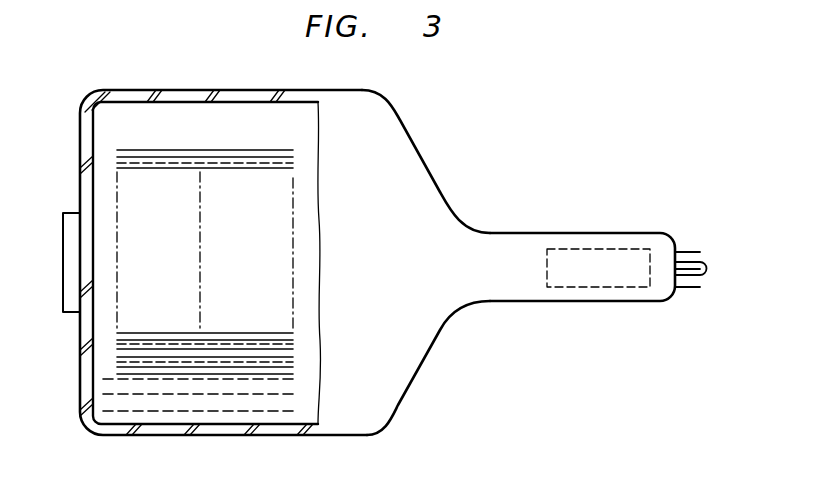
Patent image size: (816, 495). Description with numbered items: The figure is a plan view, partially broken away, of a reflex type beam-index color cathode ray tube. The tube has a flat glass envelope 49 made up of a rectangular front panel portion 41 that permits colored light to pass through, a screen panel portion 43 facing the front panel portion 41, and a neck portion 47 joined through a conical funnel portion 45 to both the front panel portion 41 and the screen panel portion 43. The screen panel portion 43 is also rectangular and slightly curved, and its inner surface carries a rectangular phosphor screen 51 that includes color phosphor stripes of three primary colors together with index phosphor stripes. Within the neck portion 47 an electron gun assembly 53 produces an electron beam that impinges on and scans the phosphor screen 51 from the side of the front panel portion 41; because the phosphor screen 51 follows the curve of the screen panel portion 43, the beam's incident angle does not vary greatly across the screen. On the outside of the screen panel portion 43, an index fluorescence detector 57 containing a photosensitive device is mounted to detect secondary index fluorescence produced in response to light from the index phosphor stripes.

The front panel portion 41 is at (327, 169).
The screen panel portion 43 is at (120, 124).
The conical funnel portion 45 is at (430, 218).
The neck portion 47 is at (526, 244).
The flat glass envelope 49 is at (474, 312).
The phosphor screen 51 is at (295, 177).
The electron gun assembly 53 is at (547, 254).
The index fluorescence detector 57 is at (69, 217).